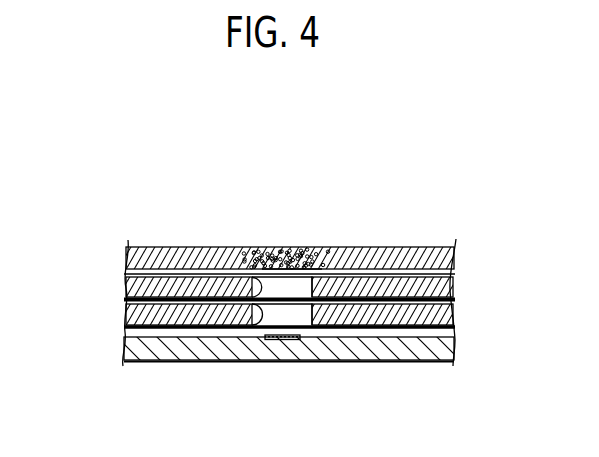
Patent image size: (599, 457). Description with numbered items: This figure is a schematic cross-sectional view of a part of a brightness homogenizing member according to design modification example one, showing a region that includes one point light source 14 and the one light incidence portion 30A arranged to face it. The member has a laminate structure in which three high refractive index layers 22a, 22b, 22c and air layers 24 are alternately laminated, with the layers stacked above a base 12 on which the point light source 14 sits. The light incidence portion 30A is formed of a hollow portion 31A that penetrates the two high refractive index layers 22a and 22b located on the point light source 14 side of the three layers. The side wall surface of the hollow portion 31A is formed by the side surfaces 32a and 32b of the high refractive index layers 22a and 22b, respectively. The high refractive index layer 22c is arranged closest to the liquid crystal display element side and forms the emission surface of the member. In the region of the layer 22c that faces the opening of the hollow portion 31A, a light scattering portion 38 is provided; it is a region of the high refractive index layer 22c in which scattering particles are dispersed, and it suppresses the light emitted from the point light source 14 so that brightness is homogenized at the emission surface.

The substrate 12 is at (124, 348).
The point light source 14 is at (300, 340).
The high refractive index layer 22a is at (126, 315).
The high refractive index layer 22b is at (127, 285).
The high refractive index layer 22c is at (126, 256).
The air layers 24 is at (430, 300).
The light incidence portion 30A is at (293, 270).
The hollow portion 31A is at (270, 280).
The side surface 32a is at (260, 318).
The side surface 32b is at (258, 289).
The light scattering portion 38 is at (276, 238).